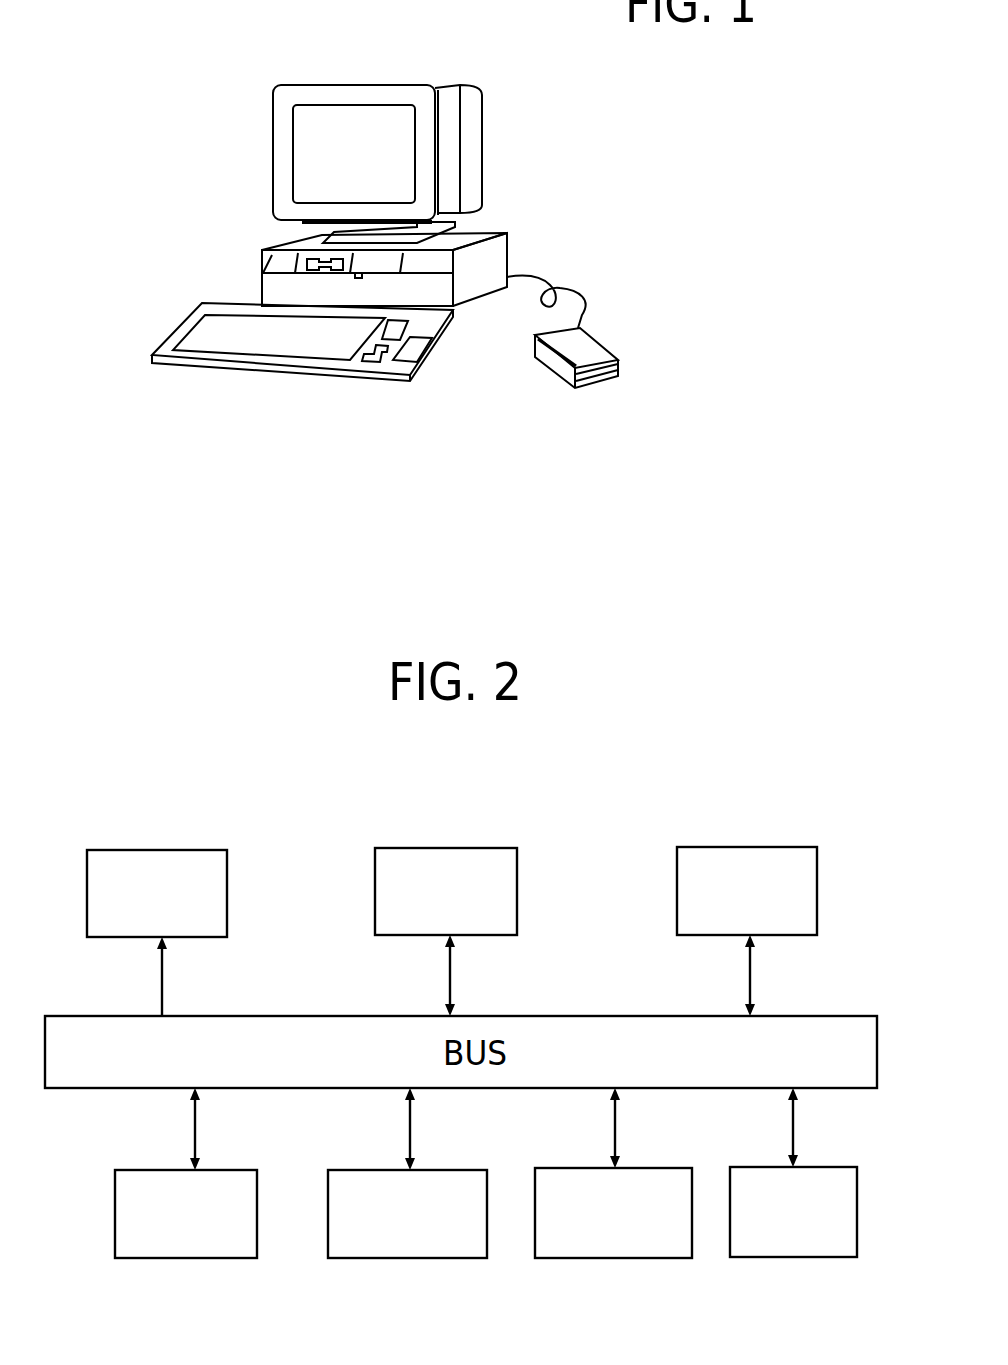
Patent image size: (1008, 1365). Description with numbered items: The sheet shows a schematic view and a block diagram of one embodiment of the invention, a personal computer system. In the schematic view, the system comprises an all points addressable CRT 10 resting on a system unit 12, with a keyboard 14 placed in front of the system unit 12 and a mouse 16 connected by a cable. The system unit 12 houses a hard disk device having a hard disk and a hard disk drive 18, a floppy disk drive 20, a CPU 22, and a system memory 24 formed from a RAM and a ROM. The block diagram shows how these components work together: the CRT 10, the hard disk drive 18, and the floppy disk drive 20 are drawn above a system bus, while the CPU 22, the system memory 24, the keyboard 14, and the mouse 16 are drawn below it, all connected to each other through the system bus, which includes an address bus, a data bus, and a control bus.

In FIG. 1, the CRT 10 is at (362, 118).
In FIG. 2, the CRT 10 is at (187, 850).
In FIG. 1, the system unit 12 is at (502, 233).
In FIG. 1, the keyboard 14 is at (192, 316).
In FIG. 2, the keyboard 14 is at (658, 1167).
In FIG. 1, the mouse 16 is at (607, 350).
In FIG. 2, the mouse 16 is at (825, 1165).
In FIG. 2, the hard disk drive 18 is at (477, 848).
In FIG. 2, the floppy disk drive 20 is at (778, 847).
In FIG. 2, the CPU 22 is at (222, 1168).
In FIG. 2, the system memory 24 is at (452, 1168).